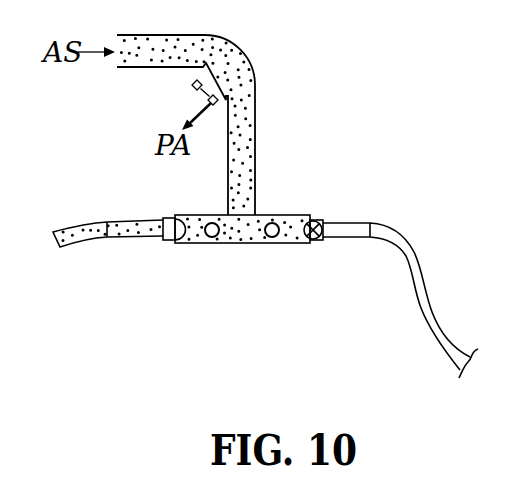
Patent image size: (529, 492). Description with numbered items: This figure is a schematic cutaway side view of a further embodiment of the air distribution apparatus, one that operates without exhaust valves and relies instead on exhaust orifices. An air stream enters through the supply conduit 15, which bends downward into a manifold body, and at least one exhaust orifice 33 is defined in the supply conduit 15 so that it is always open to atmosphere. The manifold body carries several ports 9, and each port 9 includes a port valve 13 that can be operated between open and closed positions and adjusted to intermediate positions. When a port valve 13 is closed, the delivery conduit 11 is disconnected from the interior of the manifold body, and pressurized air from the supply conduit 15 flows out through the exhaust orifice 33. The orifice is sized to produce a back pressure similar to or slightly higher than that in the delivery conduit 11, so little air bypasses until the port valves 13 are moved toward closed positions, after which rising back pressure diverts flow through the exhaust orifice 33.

The supply conduit 15 is at (256, 108).
The exhaust orifice 33 is at (192, 80).
The port valve 13 is at (174, 217).
The port 9 is at (187, 240).
The delivery conduit 11 is at (430, 274).